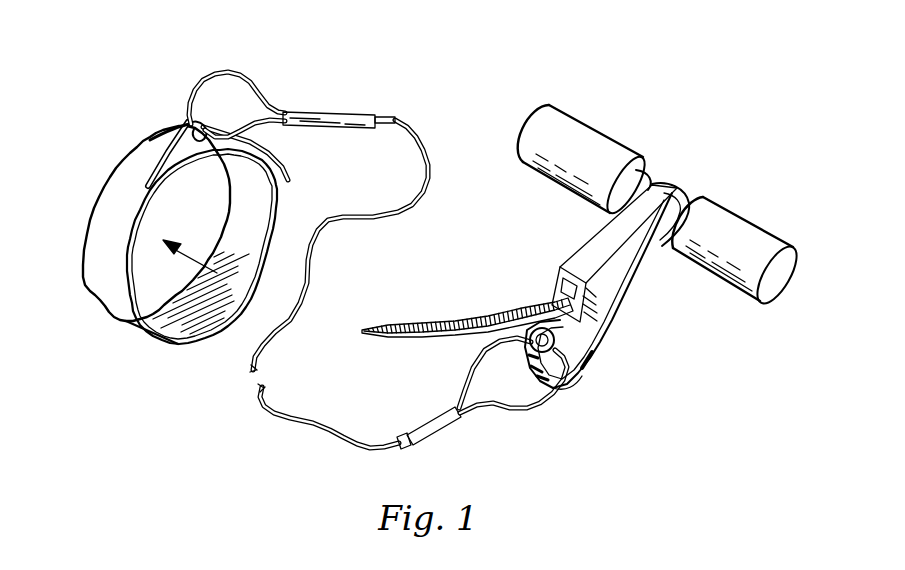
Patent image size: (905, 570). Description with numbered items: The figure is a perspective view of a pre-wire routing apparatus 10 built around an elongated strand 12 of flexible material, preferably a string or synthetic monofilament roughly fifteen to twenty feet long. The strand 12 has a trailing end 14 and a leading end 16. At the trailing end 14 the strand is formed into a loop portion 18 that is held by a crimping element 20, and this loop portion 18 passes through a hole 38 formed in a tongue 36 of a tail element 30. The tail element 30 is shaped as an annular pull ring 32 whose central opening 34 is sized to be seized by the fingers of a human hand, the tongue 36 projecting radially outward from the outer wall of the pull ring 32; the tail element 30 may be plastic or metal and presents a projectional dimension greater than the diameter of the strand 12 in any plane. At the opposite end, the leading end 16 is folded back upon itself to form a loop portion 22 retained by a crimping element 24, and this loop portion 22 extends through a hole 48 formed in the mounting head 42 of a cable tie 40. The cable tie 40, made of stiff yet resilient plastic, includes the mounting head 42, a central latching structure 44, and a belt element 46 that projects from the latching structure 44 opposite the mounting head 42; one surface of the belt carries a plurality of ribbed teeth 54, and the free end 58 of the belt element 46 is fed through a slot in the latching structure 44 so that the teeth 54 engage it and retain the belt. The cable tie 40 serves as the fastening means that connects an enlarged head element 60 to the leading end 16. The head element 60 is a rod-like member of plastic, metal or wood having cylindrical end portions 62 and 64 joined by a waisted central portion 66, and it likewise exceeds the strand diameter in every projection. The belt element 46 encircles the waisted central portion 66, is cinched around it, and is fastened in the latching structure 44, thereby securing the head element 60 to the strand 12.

The pre-wire routing apparatus 10 is at (465, 67).
The elongated strand 12 is at (390, 218).
The trailing end 14 is at (230, 97).
The leading end 16 is at (505, 383).
The loop portion 18 is at (258, 129).
The crimping element 20 is at (311, 112).
The loop portion 22 is at (477, 357).
The crimping element 24 is at (438, 424).
The tail element 30 is at (121, 337).
The annular pull ring 32 is at (117, 233).
The central opening 34 is at (244, 276).
The tongue 36 is at (262, 176).
The hole 38 is at (180, 128).
The cable tie 40 is at (531, 276).
The mounting head 42 is at (585, 350).
The central latching structure 44 is at (616, 296).
The belt element 46 is at (672, 196).
The hole 48 is at (588, 366).
The ribbed teeth 54 is at (390, 323).
The free end 58 is at (361, 331).
The head element 60 is at (604, 115).
The cylindrical end portion 62 is at (555, 178).
The cylindrical end portion 64 is at (733, 293).
The waisted central portion 66 is at (648, 192).